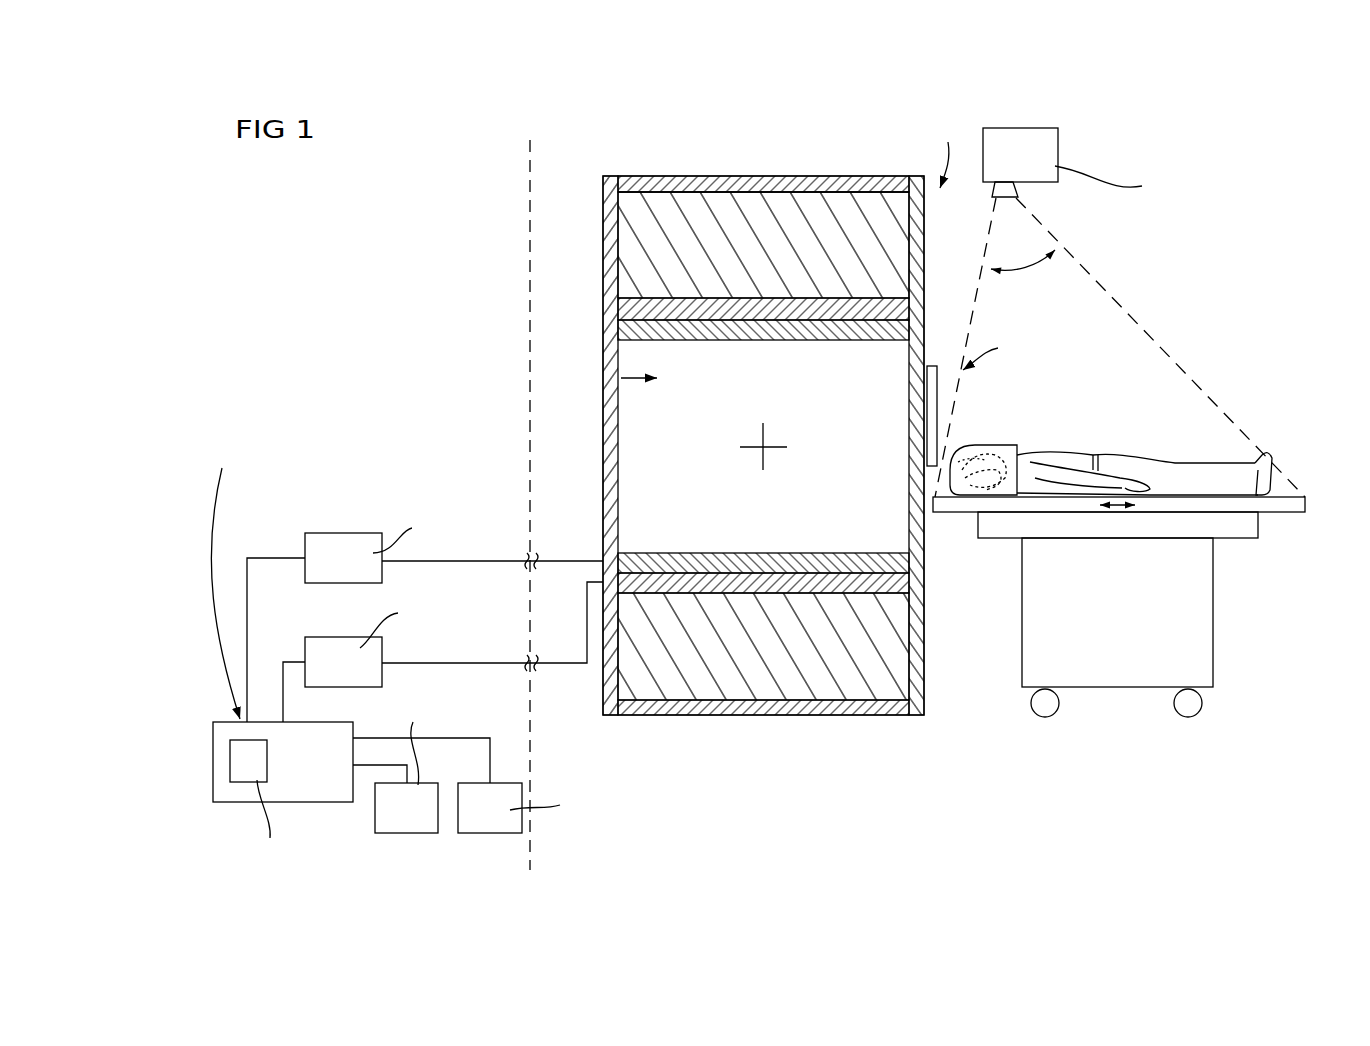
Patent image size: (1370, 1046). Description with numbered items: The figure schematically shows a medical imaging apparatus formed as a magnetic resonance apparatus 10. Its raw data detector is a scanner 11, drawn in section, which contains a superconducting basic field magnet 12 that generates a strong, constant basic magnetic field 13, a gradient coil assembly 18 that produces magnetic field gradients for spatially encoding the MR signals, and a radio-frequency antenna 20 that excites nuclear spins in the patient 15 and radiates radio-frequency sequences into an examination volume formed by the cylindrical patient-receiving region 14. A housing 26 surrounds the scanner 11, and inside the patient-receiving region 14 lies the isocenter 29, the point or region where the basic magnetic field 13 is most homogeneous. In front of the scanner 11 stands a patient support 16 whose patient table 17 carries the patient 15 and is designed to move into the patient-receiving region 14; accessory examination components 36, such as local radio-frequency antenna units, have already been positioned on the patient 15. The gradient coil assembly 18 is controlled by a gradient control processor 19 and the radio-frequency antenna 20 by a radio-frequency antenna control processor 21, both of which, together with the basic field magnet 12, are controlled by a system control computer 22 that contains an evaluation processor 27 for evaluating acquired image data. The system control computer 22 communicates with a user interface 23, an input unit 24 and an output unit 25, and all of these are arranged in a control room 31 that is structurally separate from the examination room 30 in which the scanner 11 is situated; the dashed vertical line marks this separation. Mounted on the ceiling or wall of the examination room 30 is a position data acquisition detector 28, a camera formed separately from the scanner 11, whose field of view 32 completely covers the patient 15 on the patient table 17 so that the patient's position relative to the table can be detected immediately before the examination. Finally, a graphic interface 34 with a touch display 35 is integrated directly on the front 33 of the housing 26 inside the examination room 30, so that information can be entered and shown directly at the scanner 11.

The magnetic resonance apparatus 10 is at (593, 127).
The scanner 11 is at (942, 258).
The superconducting basic field magnet 12 is at (725, 205).
The basic magnetic field 13 is at (640, 378).
The patient-receiving region 14 is at (659, 470).
The patient 15 is at (1147, 470).
The patient support 16 is at (1233, 626).
The patient table 17 is at (1282, 512).
The gradient coil assembly 18 is at (627, 310).
The gradient control processor 19 is at (305, 650).
The radio-frequency antenna 20 is at (628, 331).
The radio-frequency antenna control processor 21 is at (305, 547).
The system control computer 22 is at (231, 718).
The user interface 23 is at (362, 800).
The input unit 24 is at (408, 835).
The output unit 25 is at (491, 835).
The housing 26 is at (828, 190).
The evaluation processor 27 is at (254, 780).
The position data acquisition detector 28 is at (1058, 150).
The isocenter 29 is at (767, 442).
The examination room 30 is at (541, 164).
The control room 31 is at (513, 232).
The field of view 32 is at (1028, 270).
The front 33 is at (926, 612).
The graphic interface 34 is at (931, 363).
The touch display 35 is at (938, 412).
The accessory examination components 36 is at (1005, 445).